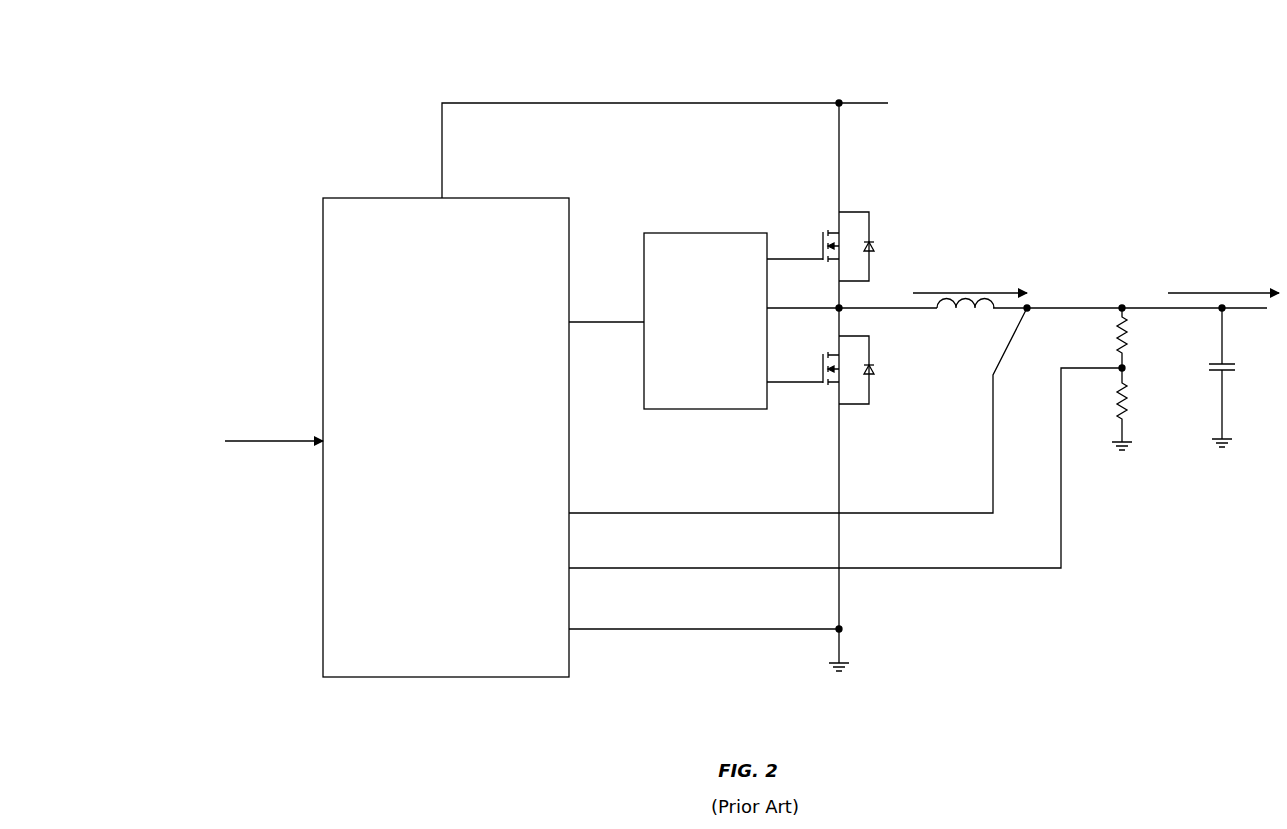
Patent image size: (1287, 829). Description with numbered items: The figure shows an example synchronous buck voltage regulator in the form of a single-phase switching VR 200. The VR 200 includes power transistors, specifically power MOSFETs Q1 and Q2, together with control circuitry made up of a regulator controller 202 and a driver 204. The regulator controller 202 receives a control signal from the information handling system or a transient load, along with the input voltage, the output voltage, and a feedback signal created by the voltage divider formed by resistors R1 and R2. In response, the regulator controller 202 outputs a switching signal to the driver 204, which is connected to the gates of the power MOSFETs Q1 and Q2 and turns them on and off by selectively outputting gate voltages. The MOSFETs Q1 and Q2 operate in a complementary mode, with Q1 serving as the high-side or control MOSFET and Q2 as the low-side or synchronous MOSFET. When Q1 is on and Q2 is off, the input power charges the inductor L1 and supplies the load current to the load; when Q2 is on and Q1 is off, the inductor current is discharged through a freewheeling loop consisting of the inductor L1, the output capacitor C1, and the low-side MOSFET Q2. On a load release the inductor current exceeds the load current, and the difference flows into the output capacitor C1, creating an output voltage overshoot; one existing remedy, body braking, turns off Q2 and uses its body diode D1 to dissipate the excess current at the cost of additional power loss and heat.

The single-phase switching voltage regulator 200 is at (1074, 171).
The regulator controller 202 is at (322, 212).
The driver 204 is at (641, 247).
The high-side power MOSFET Q1 is at (820, 239).
The low-side power MOSFET Q2 is at (826, 391).
The body diode D1 is at (885, 375).
The inductor L1 is at (968, 319).
The resistor R1 is at (1141, 338).
The resistor R2 is at (1138, 409).
The output capacitor C1 is at (1241, 377).